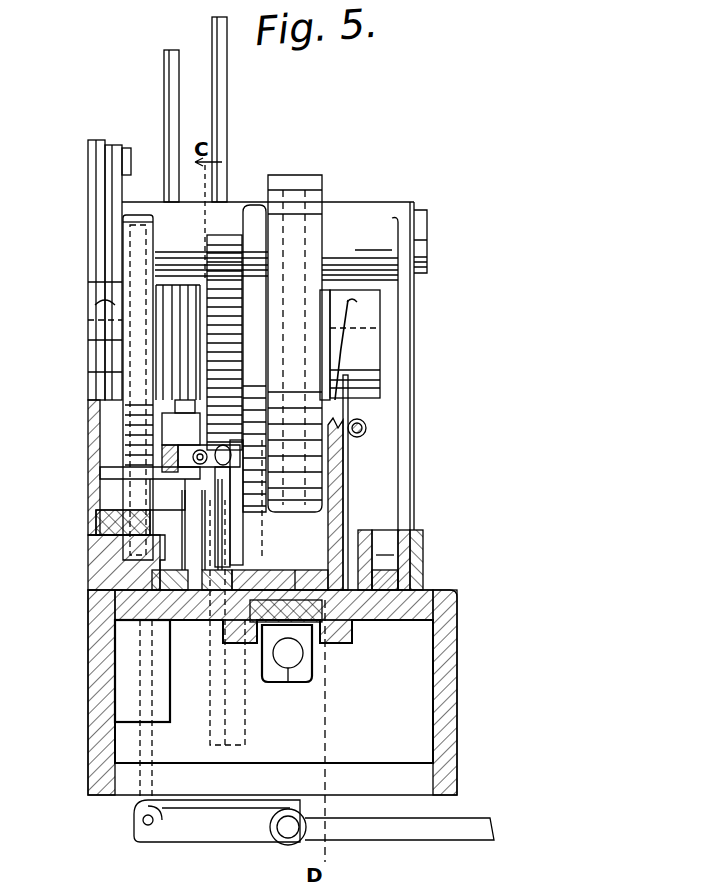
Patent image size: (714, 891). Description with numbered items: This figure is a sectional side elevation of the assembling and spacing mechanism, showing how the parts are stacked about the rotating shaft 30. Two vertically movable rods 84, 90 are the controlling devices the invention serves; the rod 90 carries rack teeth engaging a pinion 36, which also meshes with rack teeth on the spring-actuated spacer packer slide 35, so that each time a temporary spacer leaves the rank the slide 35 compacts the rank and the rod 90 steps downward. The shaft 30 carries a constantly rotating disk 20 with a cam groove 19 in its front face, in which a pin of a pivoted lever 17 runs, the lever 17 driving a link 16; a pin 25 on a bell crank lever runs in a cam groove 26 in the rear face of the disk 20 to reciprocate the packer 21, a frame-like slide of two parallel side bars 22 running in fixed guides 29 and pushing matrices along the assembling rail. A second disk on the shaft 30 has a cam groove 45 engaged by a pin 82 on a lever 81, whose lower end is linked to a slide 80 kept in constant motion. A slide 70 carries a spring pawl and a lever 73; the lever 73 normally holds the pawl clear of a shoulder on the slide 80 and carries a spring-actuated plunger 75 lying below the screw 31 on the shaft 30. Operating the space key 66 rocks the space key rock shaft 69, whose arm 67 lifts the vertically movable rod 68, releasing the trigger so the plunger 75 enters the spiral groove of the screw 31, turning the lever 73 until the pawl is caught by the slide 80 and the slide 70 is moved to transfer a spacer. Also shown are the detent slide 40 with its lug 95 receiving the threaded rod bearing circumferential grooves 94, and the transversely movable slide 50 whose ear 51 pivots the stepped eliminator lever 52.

The link 16 is at (360, 440).
The pivoted lever 17 is at (348, 488).
The cam groove 19 is at (324, 196).
The disk 20 is at (322, 238).
The packer 21 is at (416, 528).
The side bars 22 is at (390, 547).
The pin 25 is at (272, 232).
The cam groove 26 is at (280, 428).
The fixed guides 29 is at (364, 536).
The shaft 30 is at (382, 352).
The screw 31 is at (168, 275).
The spacer packer slide 35 is at (278, 582).
The pinion 36 is at (236, 745).
The detent slide 40 is at (318, 640).
The cam groove 45 is at (140, 245).
The transversely movable slide 50 is at (190, 590).
The ear 51 is at (225, 517).
The eliminator lever 52 is at (250, 546).
The space key 66 is at (418, 840).
The arm 67 is at (217, 821).
The vertically movable rod 68 is at (148, 752).
The space key rock shaft 69 is at (288, 827).
The slide 70 is at (120, 513).
The lever 73 is at (132, 483).
The spring-actuated plunger 75 is at (201, 434).
The slide 80 is at (112, 548).
The lever 81 is at (110, 222).
The pin 82 is at (135, 337).
The rod 84 is at (168, 98).
The rod 90 is at (228, 118).
The circumferential grooves 94 is at (287, 653).
The lug 95 is at (286, 684).